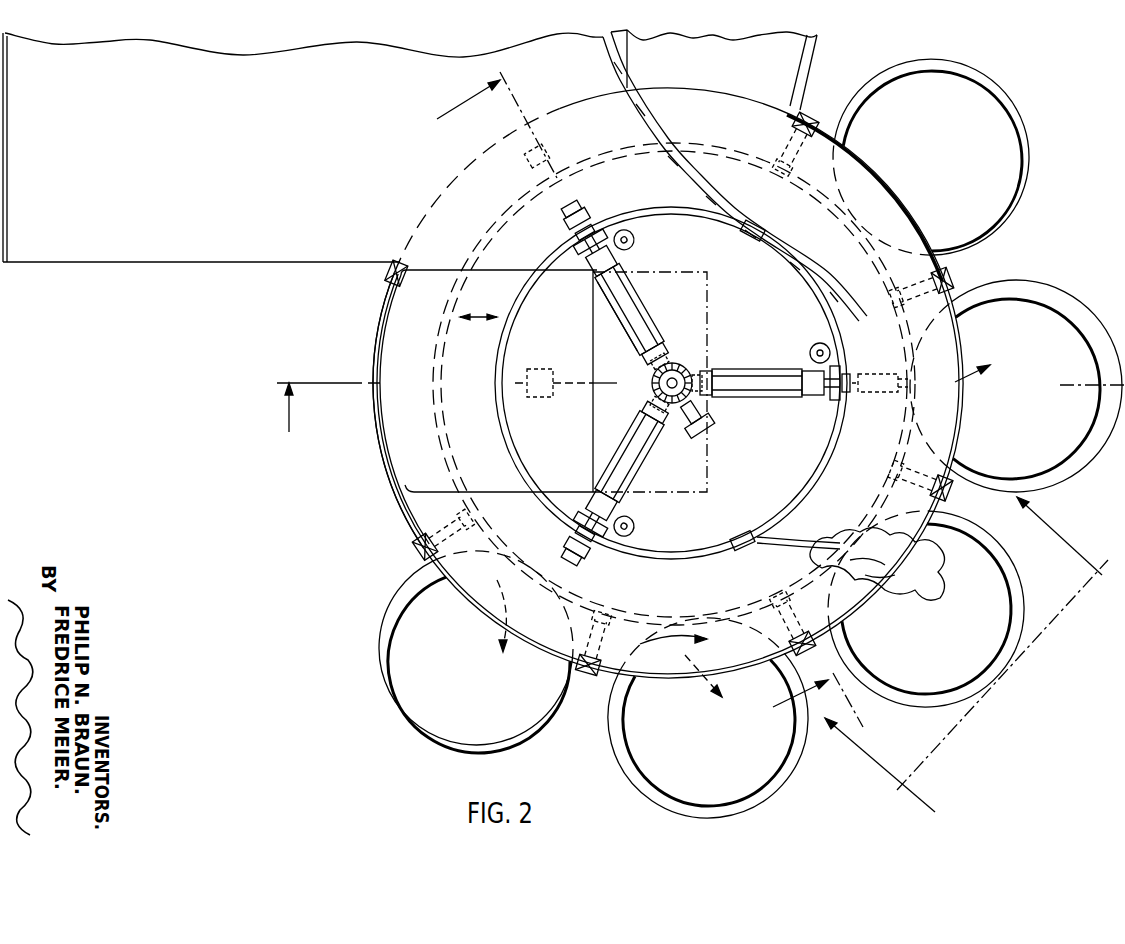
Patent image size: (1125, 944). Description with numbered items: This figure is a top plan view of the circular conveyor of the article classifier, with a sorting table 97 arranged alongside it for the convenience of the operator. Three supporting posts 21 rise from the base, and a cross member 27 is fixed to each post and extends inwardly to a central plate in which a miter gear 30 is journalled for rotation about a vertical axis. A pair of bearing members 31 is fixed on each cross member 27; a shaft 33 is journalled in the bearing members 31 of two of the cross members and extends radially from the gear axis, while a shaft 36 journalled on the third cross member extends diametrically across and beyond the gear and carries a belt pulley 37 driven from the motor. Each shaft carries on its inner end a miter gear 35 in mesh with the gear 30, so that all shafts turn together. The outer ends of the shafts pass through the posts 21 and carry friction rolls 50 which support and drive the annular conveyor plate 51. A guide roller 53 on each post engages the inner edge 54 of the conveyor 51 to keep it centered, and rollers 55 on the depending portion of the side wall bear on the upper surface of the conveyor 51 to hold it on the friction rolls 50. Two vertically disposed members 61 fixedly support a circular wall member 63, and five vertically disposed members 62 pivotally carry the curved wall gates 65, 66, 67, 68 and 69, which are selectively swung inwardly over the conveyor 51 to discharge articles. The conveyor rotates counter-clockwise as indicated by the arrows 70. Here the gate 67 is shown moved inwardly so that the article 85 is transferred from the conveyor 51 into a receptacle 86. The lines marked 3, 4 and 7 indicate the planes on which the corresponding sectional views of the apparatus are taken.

The sorting table 97 is at (276, 142).
The section line 4- 4 is at (638, 399).
The friction roll 50 is at (585, 216).
The guide roller 53 is at (634, 247).
The roller 55 is at (760, 242).
The vertically disposed member 62 is at (812, 110).
The curved wall gate 69 is at (868, 158).
The receptacle 86 is at (1026, 156).
The vertically disposed member 61 is at (392, 267).
The supporting post 21 is at (585, 262).
The shaft 36 is at (628, 297).
The cross member 27 is at (641, 311).
The miter gear 35 is at (679, 362).
The miter gear 30 is at (650, 376).
The bearing member 31 is at (718, 370).
The curved wall gate 68 is at (964, 348).
The section line 3- 3 is at (328, 421).
The circular wall member 63 is at (386, 468).
The shaft 33 is at (625, 463).
The belt pulley 37 is at (712, 423).
The annular conveyor plate 51 is at (873, 478).
The inner edge 54 is at (781, 515).
The curved wall gate 67 is at (802, 546).
The article 85 is at (920, 593).
The section line 7- 7 is at (970, 669).
The curved wall gate 65 is at (470, 606).
The arrow 70 is at (662, 646).
The curved wall gate 66 is at (673, 682).